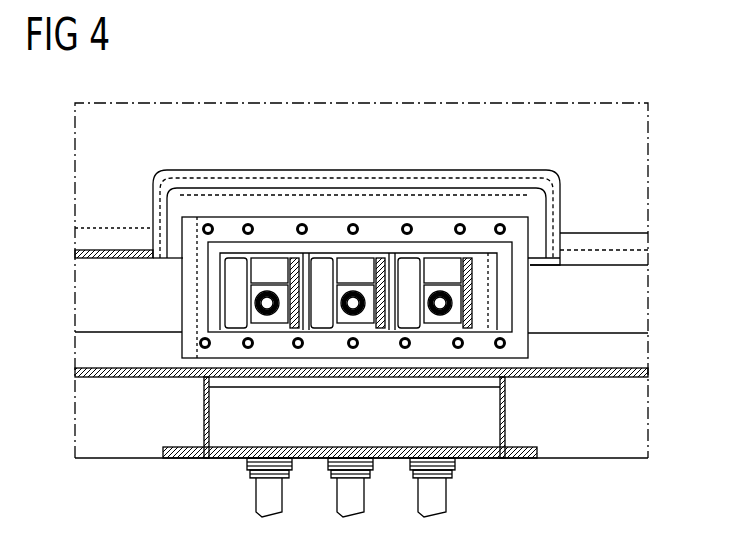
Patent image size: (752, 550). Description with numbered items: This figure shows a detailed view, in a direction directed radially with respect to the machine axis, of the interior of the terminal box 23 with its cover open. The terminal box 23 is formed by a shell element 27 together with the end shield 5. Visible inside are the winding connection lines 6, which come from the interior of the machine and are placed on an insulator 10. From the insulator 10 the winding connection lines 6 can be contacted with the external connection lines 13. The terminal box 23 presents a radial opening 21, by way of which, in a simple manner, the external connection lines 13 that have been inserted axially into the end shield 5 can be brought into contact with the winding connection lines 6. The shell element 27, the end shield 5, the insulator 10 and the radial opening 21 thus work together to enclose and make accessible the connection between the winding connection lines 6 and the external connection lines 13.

The end shield 5 is at (88, 405).
The winding connection lines 6 is at (362, 273).
The insulator 10 is at (284, 296).
The external connection lines 13 is at (268, 498).
The radial opening 21 is at (238, 296).
The terminal box 23 is at (532, 215).
The shell element 27 is at (233, 248).